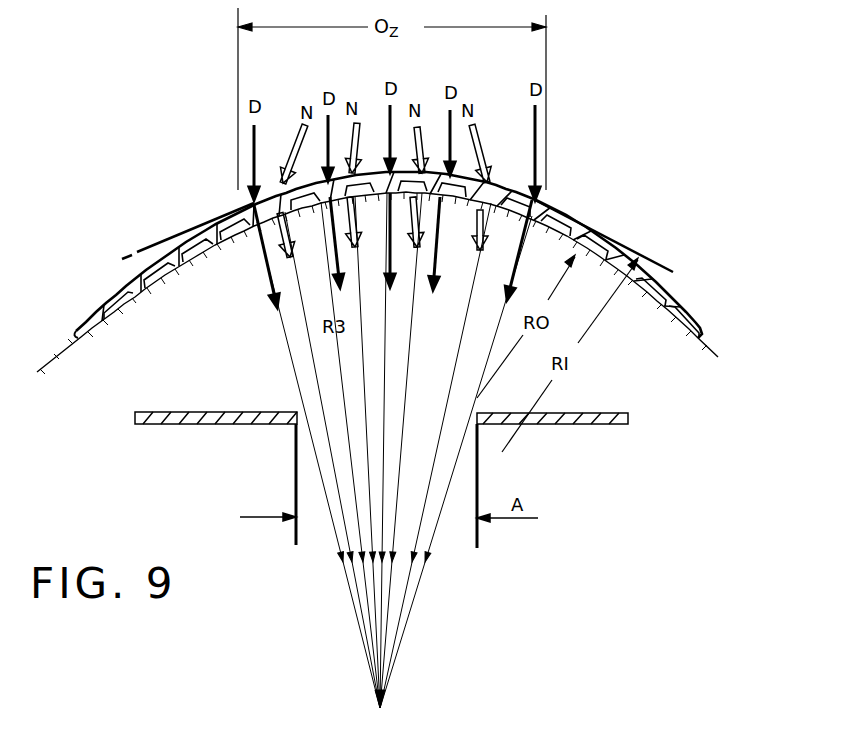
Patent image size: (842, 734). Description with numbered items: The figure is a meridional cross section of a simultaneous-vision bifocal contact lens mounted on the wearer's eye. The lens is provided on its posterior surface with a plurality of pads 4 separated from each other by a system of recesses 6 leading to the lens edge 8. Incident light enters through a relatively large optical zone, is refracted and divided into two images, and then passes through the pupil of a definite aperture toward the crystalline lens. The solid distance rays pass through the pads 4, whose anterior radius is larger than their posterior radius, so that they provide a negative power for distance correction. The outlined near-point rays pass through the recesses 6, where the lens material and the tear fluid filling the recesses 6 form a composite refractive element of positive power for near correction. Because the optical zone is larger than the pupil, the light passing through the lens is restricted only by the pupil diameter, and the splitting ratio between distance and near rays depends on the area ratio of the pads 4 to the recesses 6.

The lens edge 8 is at (72, 331).
The pads 4 is at (205, 250).
The recesses 6 is at (238, 235).